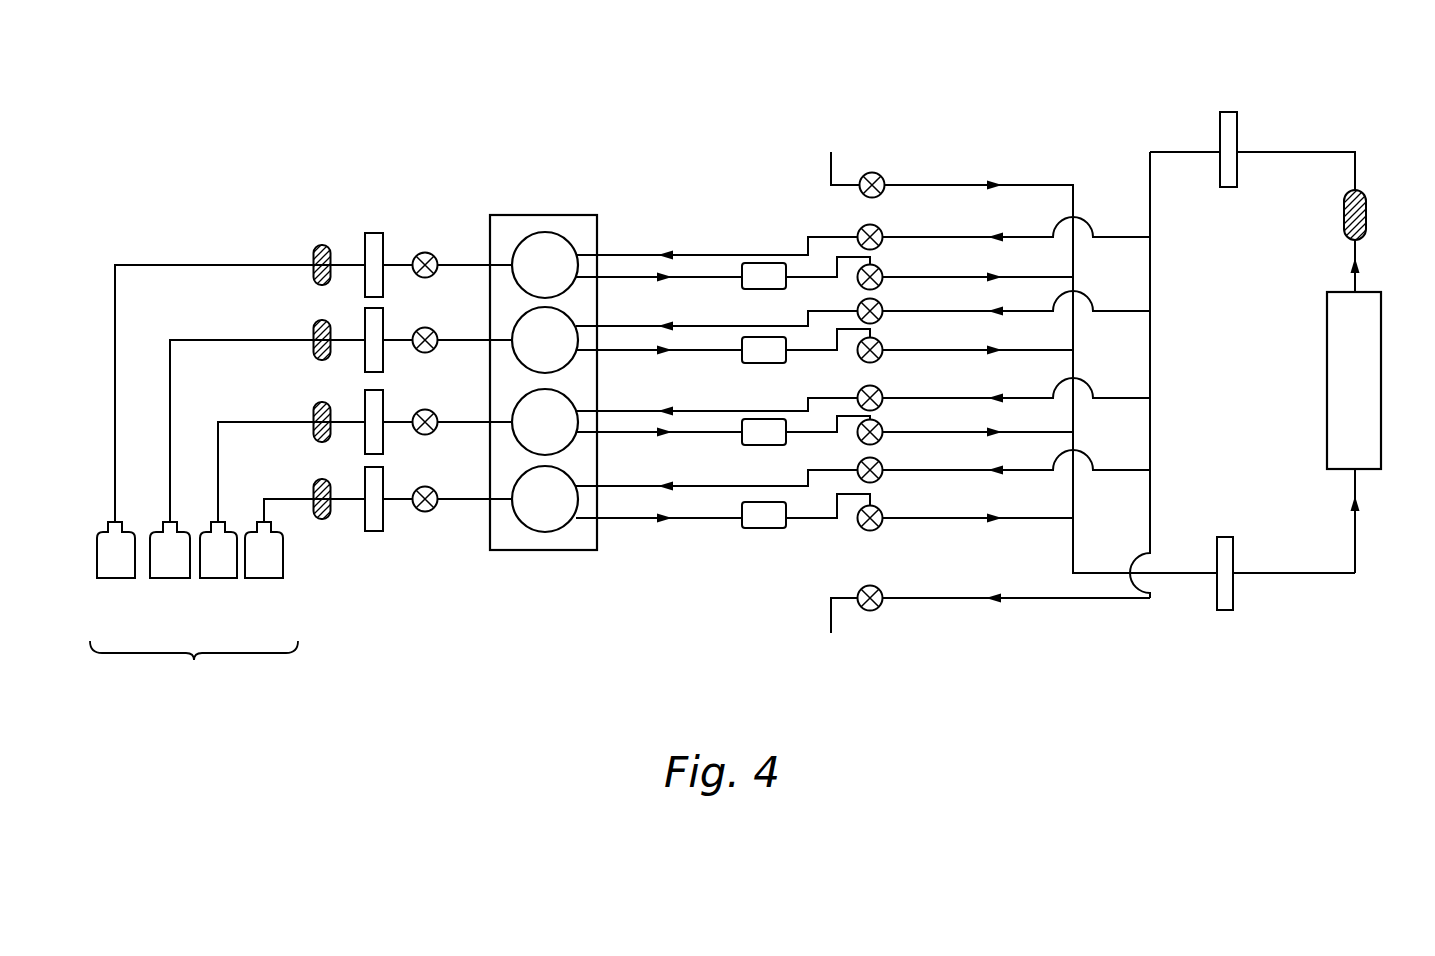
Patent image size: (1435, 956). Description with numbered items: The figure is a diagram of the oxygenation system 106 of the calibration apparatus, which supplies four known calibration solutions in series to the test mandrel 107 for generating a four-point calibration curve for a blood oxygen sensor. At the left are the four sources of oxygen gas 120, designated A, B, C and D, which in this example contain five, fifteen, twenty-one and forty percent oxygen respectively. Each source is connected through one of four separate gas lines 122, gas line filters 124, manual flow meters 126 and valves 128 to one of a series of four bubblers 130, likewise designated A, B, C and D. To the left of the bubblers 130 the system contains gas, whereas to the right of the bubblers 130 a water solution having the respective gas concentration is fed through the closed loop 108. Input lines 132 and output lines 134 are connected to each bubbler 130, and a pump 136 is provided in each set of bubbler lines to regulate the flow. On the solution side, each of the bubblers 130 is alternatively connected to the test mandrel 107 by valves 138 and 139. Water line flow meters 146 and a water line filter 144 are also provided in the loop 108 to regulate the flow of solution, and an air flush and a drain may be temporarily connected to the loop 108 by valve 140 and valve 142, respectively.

The oxygenation system 106 is at (765, 92).
The test mandrel 107 is at (1326, 378).
The closed loop 108 is at (1356, 548).
The sources of oxygen gas 120 is at (194, 609).
The gas lines 122 is at (113, 360).
The gas line filters 124 is at (311, 258).
The manual flow meters 126 is at (389, 237).
The valves 128 is at (436, 253).
The bubblers 130 is at (560, 215).
The input lines 132 is at (721, 281).
The output lines 134 is at (718, 253).
The pump 136 is at (769, 290).
The valves 138 is at (883, 273).
The valves 139 is at (883, 231).
The valve 140 is at (884, 178).
The valve 142 is at (878, 612).
The water line filter 144 is at (1341, 237).
The water line flow meters 146 is at (1249, 628).